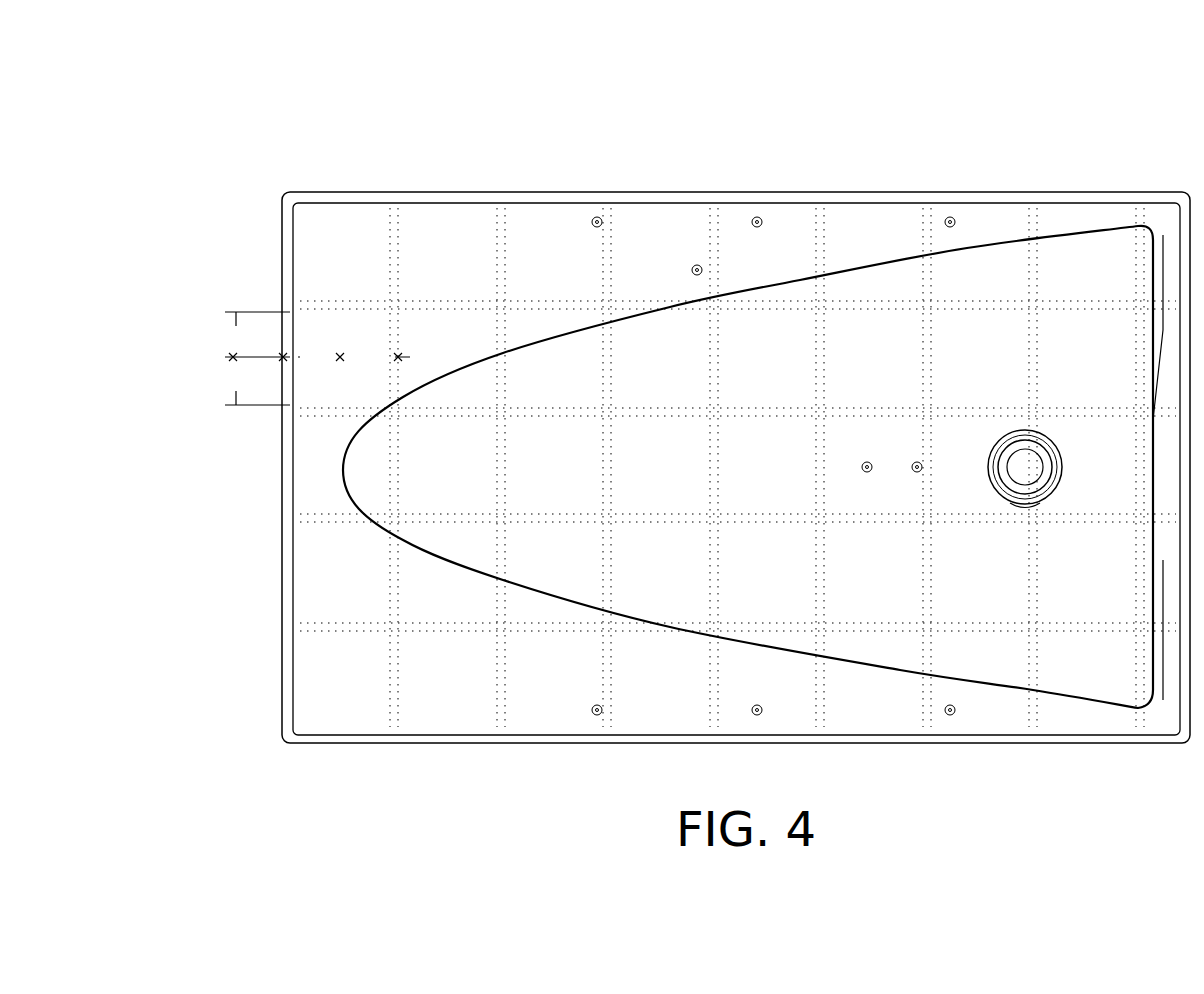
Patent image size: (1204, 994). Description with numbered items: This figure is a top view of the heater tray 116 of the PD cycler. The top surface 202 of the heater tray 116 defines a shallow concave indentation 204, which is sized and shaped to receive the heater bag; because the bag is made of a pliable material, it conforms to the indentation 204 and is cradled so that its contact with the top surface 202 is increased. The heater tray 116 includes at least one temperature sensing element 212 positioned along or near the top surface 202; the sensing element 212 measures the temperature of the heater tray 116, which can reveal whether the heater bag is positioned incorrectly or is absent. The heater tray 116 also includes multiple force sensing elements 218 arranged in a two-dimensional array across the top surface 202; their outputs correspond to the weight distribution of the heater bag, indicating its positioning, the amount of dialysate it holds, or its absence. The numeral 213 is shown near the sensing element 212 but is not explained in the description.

The heater tray 116 is at (536, 130).
The force sensing elements 218 is at (293, 239).
The top surface 202 is at (470, 268).
The shallow concave indentation 204 is at (512, 482).
The temperature sensing element 212 is at (1012, 418).
The opening edge 213 is at (1025, 512).